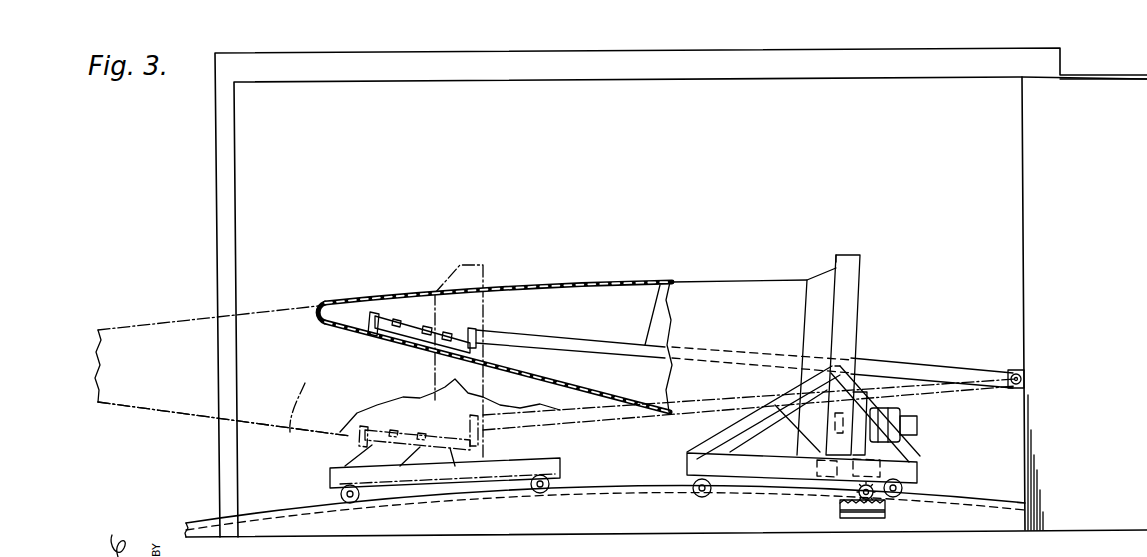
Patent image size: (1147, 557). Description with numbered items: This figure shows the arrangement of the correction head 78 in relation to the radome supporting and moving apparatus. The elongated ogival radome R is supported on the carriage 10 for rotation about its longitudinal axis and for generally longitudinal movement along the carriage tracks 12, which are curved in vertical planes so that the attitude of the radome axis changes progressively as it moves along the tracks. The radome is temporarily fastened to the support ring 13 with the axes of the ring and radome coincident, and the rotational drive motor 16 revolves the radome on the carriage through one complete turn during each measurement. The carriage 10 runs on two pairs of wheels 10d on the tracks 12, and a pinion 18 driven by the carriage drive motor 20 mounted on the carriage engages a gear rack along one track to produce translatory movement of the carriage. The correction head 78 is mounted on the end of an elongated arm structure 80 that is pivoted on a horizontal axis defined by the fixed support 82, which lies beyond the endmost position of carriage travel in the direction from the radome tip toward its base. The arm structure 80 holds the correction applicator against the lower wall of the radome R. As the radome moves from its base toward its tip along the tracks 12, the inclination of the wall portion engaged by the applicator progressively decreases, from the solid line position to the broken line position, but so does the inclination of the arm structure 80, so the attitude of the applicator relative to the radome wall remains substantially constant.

The carriage 10 is at (646, 446).
The wheels 10d is at (699, 494).
The carriage tracks 12 is at (277, 507).
The support ring 13 is at (832, 272).
The rotational drive motor 16 is at (902, 410).
The pinion 18 is at (872, 512).
The carriage drive motor 20 is at (920, 469).
The correction head 78 is at (397, 313).
The elongated arm structure 80 is at (661, 284).
The fixed support 82 is at (1014, 370).
The radome R is at (372, 330).